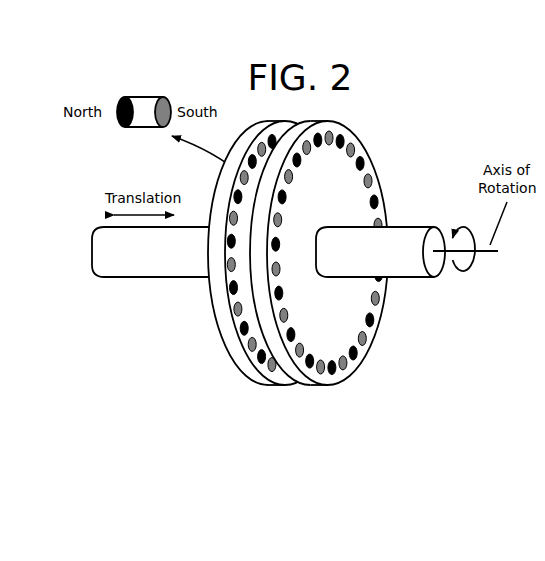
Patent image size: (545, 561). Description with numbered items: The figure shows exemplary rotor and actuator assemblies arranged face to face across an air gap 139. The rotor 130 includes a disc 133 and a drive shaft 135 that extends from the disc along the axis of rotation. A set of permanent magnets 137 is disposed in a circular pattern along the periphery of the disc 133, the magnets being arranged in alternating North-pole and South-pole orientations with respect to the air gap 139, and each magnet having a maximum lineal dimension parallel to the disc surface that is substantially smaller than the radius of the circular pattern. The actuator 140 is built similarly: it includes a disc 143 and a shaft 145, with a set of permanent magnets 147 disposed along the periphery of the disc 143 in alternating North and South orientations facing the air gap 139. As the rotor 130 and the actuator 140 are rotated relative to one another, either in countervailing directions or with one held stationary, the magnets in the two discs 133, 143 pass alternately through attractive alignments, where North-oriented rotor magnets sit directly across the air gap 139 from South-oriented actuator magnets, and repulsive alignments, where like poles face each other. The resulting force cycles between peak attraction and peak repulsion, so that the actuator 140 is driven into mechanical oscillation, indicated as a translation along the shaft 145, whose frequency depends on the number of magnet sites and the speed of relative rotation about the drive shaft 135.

The rotor 130 is at (345, 240).
The disc 133 is at (343, 131).
The drive shaft 135 is at (390, 260).
The permanent magnets 137 is at (370, 345).
The air gap 139 is at (287, 383).
The actuator 140 is at (220, 259).
The disc 143 is at (217, 298).
The shaft 145 is at (173, 268).
The permanent magnets 147 is at (269, 366).